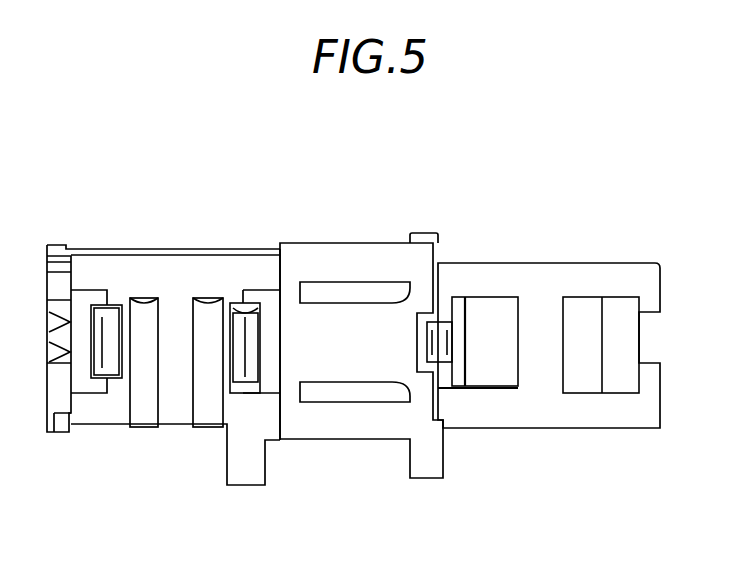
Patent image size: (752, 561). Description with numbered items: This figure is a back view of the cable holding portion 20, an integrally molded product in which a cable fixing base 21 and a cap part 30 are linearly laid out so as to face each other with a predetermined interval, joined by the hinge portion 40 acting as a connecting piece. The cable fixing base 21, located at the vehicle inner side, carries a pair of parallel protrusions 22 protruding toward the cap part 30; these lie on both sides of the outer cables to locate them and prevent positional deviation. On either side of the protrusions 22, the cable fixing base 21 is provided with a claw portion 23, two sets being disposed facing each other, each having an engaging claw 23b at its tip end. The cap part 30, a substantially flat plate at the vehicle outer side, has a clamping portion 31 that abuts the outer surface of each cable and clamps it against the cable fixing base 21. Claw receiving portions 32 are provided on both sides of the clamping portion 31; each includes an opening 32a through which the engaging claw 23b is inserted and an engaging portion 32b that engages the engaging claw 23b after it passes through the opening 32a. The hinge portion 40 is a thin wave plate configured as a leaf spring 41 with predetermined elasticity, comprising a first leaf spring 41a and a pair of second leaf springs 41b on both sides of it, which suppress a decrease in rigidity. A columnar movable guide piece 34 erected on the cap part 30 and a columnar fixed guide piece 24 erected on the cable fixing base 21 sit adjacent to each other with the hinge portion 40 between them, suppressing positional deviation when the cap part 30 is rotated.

The cable holding portion 20 is at (375, 335).
The cable fixing base 21 is at (180, 300).
The protrusions 22 is at (153, 413).
The claw portion 23 is at (180, 363).
The engaging claw 23b is at (180, 363).
The fixed guide piece 24 is at (250, 385).
The cap part 30 is at (571, 332).
The clamping portion 31 is at (543, 345).
The claw receiving portions 32 is at (571, 342).
The opening 32a is at (488, 390).
The engaging portion 32b is at (468, 340).
The movable guide piece 34 is at (440, 320).
The hinge portion 40 is at (397, 240).
The leaf spring 41 is at (347, 391).
The first leaf spring 41a is at (380, 347).
The second leaf springs 41b is at (362, 412).